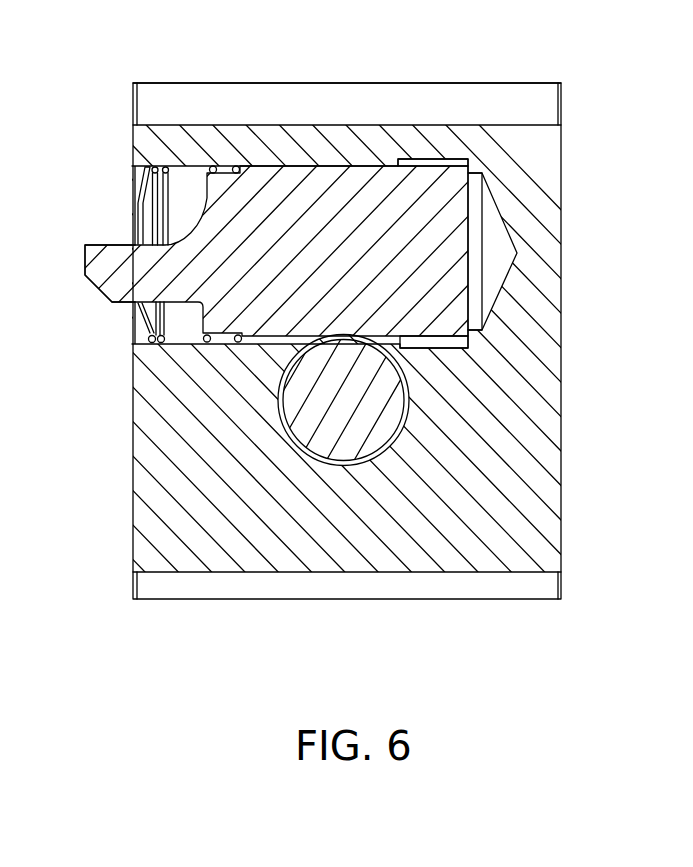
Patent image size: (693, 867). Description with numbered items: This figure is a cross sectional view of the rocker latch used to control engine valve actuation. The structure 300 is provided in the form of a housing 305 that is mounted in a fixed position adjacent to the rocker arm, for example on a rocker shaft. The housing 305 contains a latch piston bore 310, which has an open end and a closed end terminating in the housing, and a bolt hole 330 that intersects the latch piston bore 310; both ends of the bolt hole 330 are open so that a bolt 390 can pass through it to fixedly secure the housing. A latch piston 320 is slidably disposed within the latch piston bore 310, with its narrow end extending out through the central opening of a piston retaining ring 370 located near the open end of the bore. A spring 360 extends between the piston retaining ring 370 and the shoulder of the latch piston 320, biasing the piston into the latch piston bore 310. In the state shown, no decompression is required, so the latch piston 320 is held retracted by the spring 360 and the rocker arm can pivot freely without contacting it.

The structure 300 is at (479, 600).
The housing 305 is at (452, 103).
The latch piston bore 310 is at (340, 165).
The latch piston 320 is at (103, 244).
The bolt hole 330 is at (409, 403).
The spring 360 is at (163, 168).
The piston retaining ring 370 is at (131, 313).
The bolt 390 is at (331, 437).